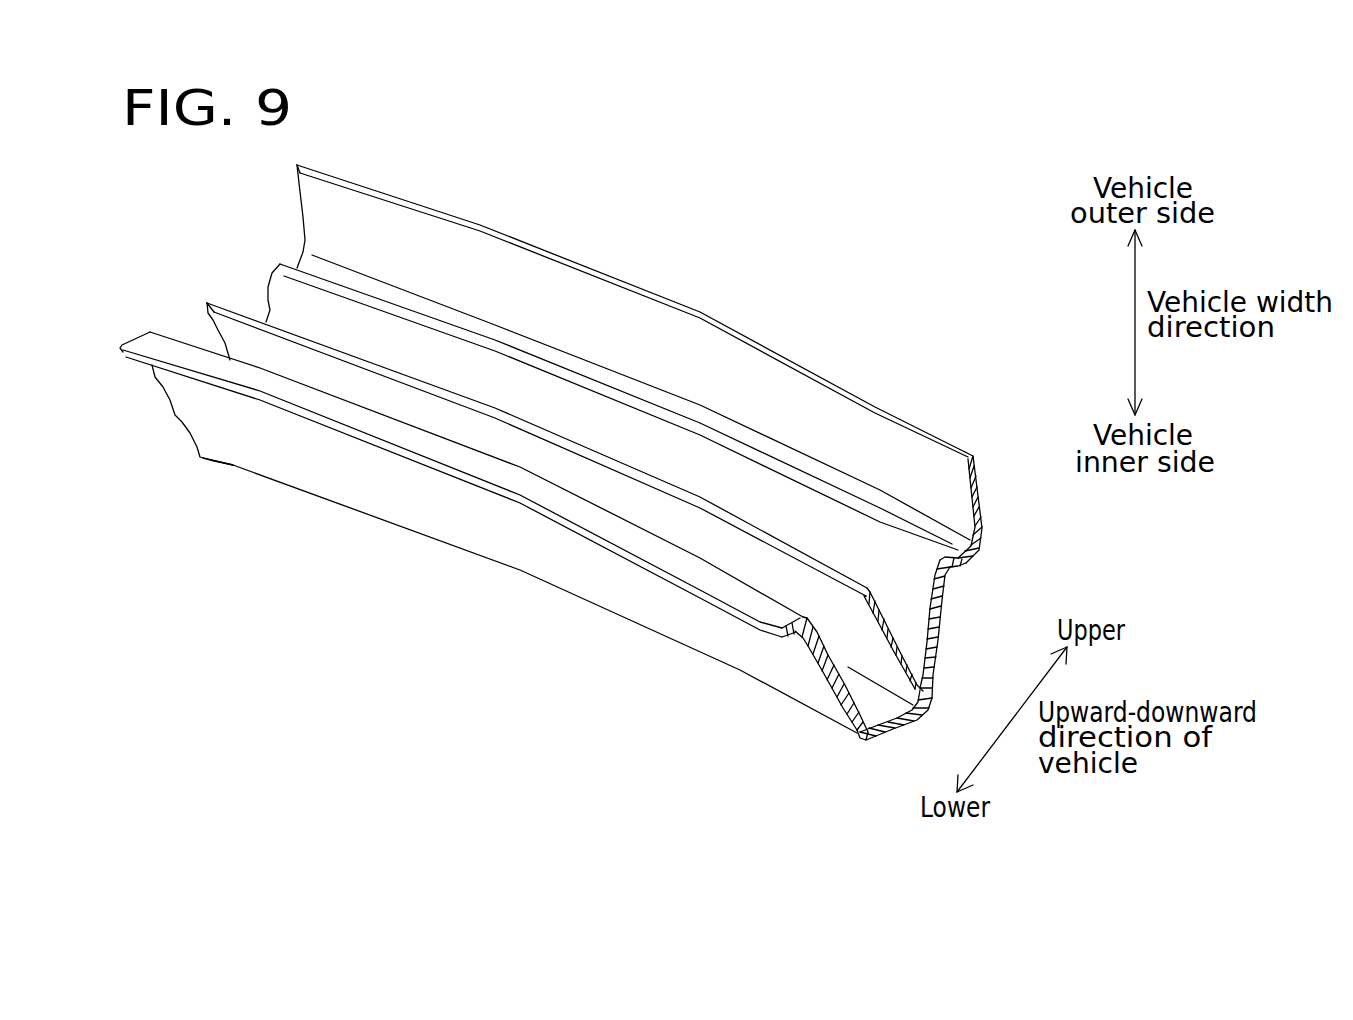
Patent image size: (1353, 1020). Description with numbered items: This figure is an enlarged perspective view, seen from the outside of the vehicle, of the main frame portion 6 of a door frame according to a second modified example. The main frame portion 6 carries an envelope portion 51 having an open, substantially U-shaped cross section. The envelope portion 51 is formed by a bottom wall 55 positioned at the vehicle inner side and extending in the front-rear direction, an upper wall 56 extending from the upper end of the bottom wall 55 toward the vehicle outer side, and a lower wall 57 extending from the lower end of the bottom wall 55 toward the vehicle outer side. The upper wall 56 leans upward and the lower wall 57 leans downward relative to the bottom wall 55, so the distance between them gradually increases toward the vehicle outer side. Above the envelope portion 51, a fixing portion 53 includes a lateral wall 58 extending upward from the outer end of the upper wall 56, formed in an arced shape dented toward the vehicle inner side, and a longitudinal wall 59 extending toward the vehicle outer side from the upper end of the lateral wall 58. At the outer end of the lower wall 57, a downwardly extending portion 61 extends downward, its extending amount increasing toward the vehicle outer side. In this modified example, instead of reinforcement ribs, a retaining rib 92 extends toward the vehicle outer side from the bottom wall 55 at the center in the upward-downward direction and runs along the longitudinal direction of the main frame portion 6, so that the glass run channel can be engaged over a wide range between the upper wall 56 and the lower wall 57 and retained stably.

The main frame portion 6 is at (794, 254).
The envelope portion 51 is at (861, 739).
The fixing portion 53 is at (970, 450).
The bottom wall 55 is at (896, 730).
The upper wall 56 is at (945, 626).
The lower wall 57 is at (832, 676).
The lateral wall 58 is at (975, 560).
The longitudinal wall 59 is at (983, 507).
The downwardly extending portion 61 is at (778, 628).
The retaining rib 92 is at (590, 447).